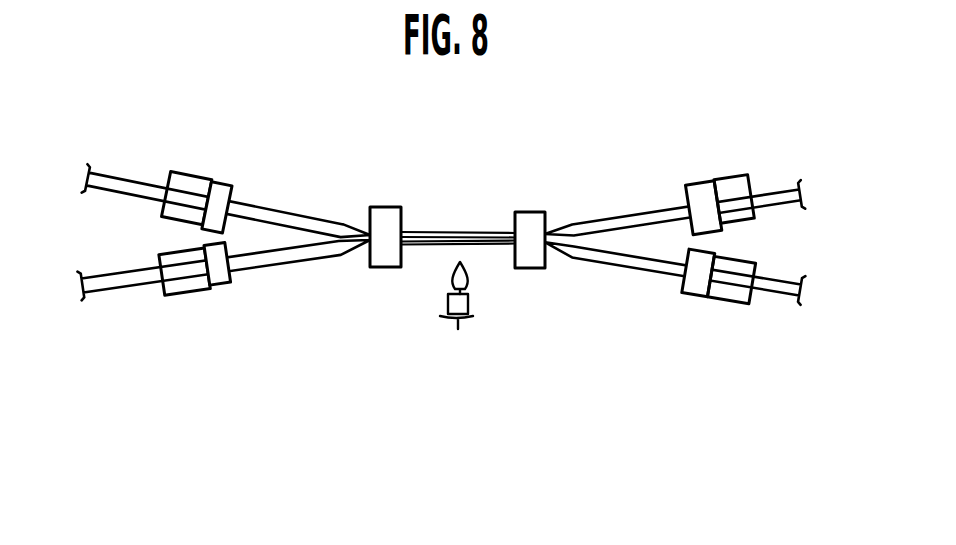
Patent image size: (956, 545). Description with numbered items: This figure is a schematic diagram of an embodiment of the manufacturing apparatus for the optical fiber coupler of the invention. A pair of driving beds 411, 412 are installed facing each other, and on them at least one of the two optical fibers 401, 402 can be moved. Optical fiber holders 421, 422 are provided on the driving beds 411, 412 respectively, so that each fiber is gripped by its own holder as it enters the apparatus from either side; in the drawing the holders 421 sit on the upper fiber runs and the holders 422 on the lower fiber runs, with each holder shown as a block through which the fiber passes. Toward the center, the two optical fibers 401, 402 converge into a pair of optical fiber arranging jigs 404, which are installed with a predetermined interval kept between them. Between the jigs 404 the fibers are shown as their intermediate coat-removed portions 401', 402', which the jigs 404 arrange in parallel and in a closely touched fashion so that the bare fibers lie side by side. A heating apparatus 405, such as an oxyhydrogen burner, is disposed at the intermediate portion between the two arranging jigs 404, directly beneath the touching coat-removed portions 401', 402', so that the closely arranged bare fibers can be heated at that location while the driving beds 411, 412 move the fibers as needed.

The optical fiber 401 is at (451, 168).
The optical fiber 402 is at (453, 313).
The intermediate coat-removed portion 401' is at (457, 187).
The intermediate coat-removed portion 402' is at (484, 283).
The optical fiber arranging jig 404 is at (531, 212).
The heating apparatus 405 is at (458, 329).
The driving bed 411 is at (199, 165).
The driving bed 412 is at (196, 297).
The optical fiber holder 421 is at (226, 184).
The optical fiber holder 422 is at (221, 294).